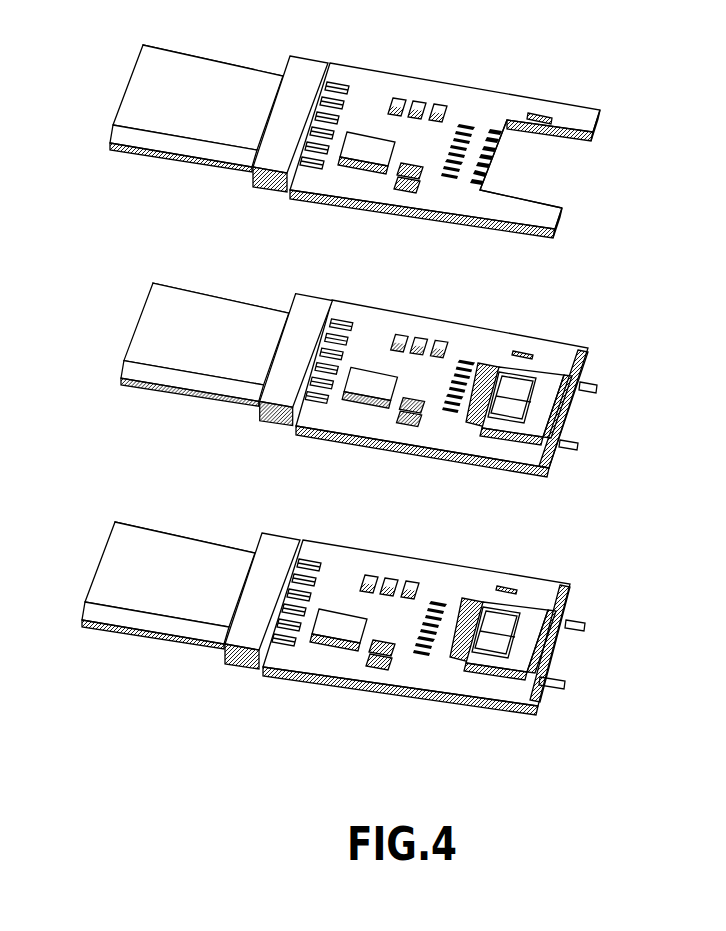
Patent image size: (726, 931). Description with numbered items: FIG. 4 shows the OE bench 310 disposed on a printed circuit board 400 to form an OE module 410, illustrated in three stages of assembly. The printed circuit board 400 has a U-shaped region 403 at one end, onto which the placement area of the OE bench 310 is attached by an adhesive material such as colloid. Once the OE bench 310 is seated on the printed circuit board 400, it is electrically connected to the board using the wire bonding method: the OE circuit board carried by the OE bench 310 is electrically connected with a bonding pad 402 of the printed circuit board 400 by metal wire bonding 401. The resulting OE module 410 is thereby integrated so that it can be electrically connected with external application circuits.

The printed circuit board 400 is at (460, 117).
The metal wire bonding 401 is at (510, 600).
The bonding pad 402 is at (537, 118).
The U-shaped region 403 is at (572, 183).
The OE bench 310 is at (588, 368).
The OE module 410 is at (367, 708).